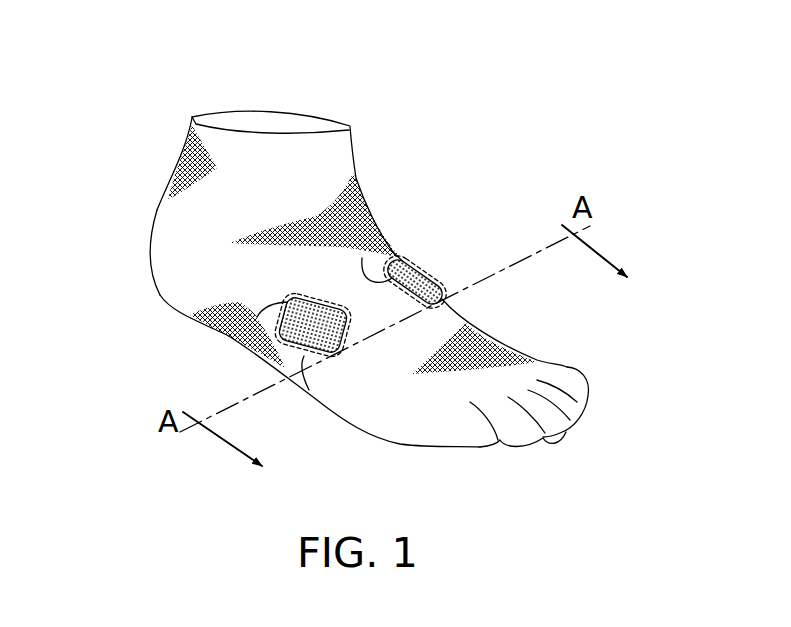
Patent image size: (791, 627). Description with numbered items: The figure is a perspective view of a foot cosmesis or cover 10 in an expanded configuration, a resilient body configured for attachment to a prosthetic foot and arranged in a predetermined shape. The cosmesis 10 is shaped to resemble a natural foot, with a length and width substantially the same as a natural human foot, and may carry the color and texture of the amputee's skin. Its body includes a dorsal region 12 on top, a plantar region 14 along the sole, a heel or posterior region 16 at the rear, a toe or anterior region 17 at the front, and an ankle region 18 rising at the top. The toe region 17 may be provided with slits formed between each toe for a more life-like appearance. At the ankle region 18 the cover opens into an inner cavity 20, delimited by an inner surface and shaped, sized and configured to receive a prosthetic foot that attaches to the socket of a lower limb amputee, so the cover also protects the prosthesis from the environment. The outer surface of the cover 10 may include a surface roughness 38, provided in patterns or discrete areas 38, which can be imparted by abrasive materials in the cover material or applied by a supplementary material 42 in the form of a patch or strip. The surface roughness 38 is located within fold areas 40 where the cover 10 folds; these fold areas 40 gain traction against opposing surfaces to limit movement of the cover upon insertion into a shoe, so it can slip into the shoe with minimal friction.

The foot cosmesis 10 is at (510, 148).
The dorsal region 12 is at (410, 254).
The plantar region 14 is at (196, 329).
The heel or posterior region 16 is at (146, 263).
The toe or anterior region 17 is at (580, 405).
The ankle region 18 is at (217, 108).
The inner cavity 20 is at (285, 120).
The surface roughness 38 is at (252, 338).
The fold areas 40 is at (390, 262).
The supplementary material 42 is at (309, 390).